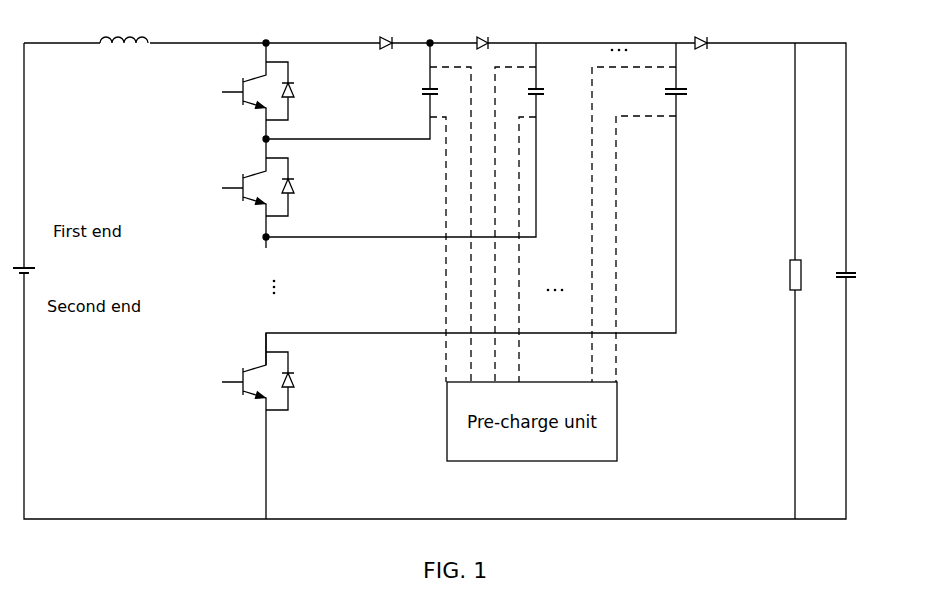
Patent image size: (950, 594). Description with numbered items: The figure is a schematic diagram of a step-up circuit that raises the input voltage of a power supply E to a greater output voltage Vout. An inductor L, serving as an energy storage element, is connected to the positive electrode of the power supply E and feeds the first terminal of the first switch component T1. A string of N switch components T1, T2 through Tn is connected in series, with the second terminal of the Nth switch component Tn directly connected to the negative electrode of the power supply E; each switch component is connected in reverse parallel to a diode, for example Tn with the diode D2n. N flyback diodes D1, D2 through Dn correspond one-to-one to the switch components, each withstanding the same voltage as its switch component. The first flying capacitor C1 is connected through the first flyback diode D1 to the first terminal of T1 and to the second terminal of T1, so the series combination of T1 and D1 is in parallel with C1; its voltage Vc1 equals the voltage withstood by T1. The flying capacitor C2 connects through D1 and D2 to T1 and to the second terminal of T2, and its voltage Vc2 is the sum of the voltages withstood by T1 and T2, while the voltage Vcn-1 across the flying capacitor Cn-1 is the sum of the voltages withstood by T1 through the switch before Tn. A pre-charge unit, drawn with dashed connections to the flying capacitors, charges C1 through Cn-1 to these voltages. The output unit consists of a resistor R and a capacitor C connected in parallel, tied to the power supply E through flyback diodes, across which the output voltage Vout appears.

The inductor L is at (116, 35).
The power supply E is at (34, 273).
The first switch component T1 is at (234, 91).
The second switch component T2 is at (234, 193).
The Nth switch component Tn is at (241, 426).
The diode D2n is at (302, 385).
The first flyback diode D1 is at (371, 37).
The second flyback diode D2 is at (465, 37).
The Nth flyback diode Dn is at (720, 37).
The flying capacitor C1 is at (411, 107).
The voltage withstood by C1 Vc1 is at (408, 90).
The flying capacitor C2 is at (552, 107).
The voltage withstood by C2 Vc2 is at (555, 90).
The flying capacitor Cn-1 is at (700, 106).
The voltage withstood by Cn-1 Vcn-1 is at (700, 89).
The resistor R is at (804, 281).
The capacitor C is at (863, 279).
The output voltage Vout is at (867, 257).